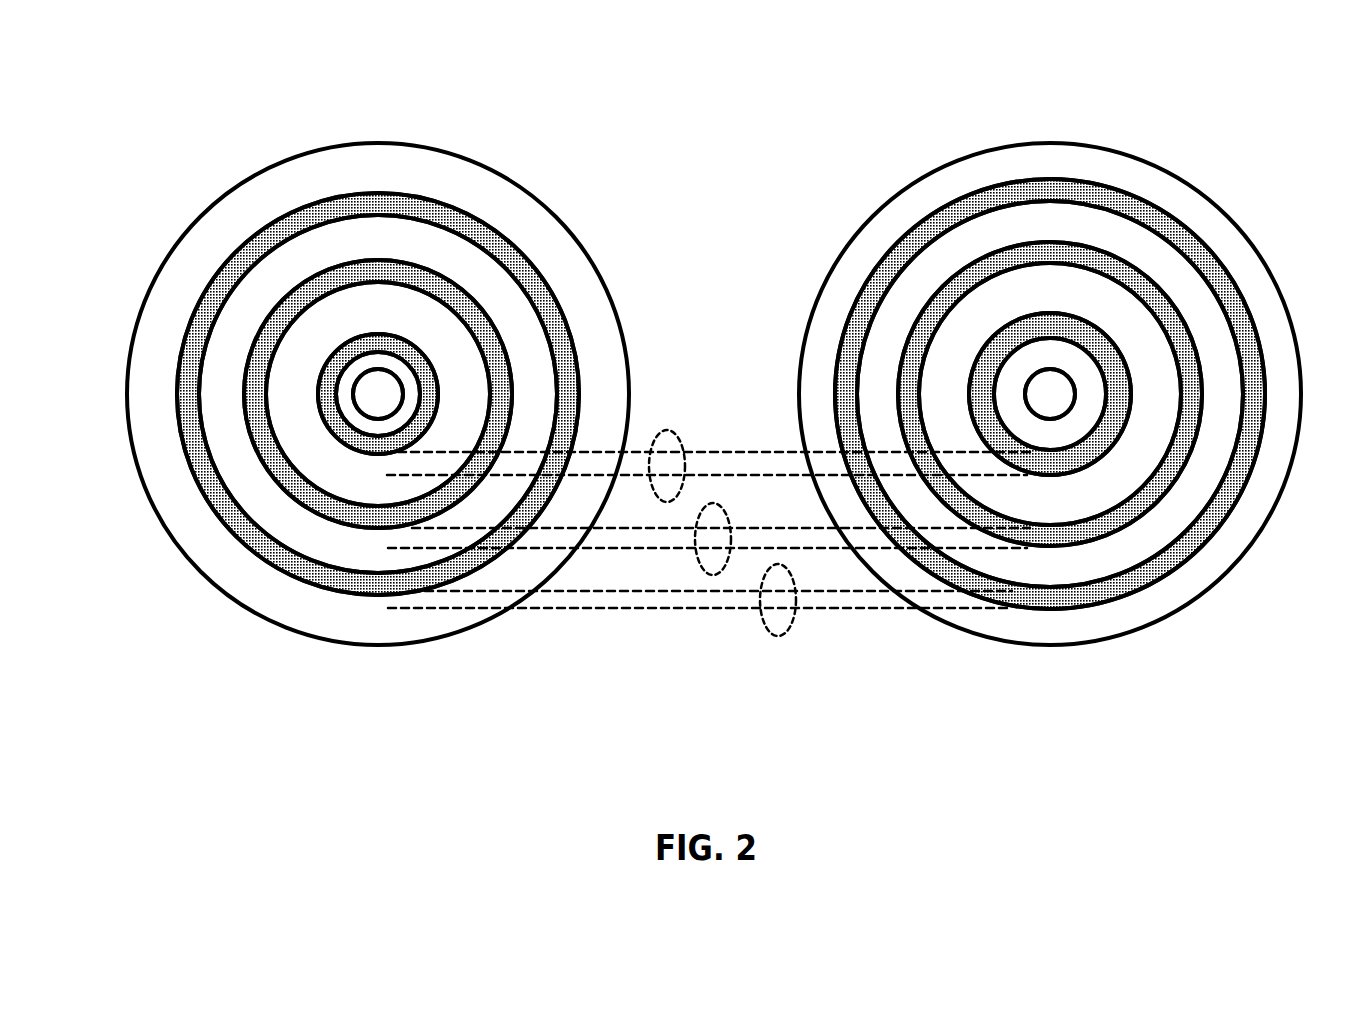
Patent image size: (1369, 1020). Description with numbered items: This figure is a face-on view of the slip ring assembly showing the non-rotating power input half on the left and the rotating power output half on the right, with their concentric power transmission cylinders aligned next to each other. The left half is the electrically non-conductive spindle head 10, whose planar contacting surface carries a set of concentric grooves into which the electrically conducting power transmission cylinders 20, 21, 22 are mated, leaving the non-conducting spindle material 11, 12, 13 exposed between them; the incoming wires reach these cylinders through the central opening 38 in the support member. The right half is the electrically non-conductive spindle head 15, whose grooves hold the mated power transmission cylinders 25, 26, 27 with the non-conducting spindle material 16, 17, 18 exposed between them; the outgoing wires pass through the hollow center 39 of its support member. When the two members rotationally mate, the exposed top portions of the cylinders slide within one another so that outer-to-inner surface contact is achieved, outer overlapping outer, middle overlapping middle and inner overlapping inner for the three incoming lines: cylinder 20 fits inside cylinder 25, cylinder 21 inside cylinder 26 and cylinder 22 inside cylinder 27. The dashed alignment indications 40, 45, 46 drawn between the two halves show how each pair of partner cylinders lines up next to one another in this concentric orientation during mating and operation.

The spindle head 10 is at (259, 212).
The non-conducting spindle material 11 is at (260, 303).
The non-conducting spindle material 12 is at (297, 359).
The non-conducting spindle material 13 is at (347, 393).
The power transmission cylinder 20 is at (257, 547).
The power transmission cylinder 21 is at (297, 490).
The power transmission cylinder 22 is at (352, 435).
The central opening 38 is at (378, 394).
The spindle head 15 is at (1076, 157).
The non-conducting spindle material 16 is at (1113, 232).
The non-conducting spindle material 17 is at (1138, 320).
The non-conducting spindle material 18 is at (1075, 365).
The power transmission cylinder 25 is at (1112, 590).
The power transmission cylinder 26 is at (1118, 523).
The power transmission cylinder 27 is at (1107, 435).
The hollow center 39 is at (1050, 394).
The cylinder alignment 46 is at (652, 492).
The cylinder alignment 45 is at (711, 577).
The cylinder alignment 40 is at (785, 637).